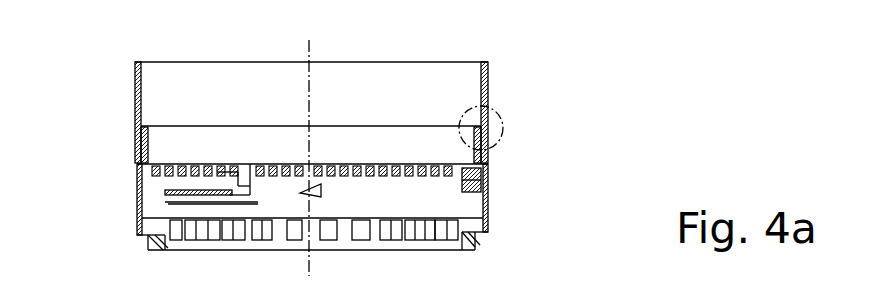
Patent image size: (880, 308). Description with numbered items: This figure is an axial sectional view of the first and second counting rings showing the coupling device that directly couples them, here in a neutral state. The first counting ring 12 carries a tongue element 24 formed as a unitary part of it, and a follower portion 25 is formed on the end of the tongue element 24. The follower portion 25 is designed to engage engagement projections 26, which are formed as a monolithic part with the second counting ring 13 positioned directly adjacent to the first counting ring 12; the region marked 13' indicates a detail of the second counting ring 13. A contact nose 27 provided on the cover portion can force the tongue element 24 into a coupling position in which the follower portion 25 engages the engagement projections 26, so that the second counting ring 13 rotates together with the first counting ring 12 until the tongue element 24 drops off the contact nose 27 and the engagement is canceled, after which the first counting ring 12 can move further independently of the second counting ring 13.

The first counting ring 12 is at (488, 232).
The second counting ring 13 is at (349, 100).
The detail region of shield edge 13' is at (521, 124).
The tongue element 24 is at (197, 200).
The follower portion 25 is at (230, 179).
The engagement projections 26 is at (352, 165).
The contact nose 27 is at (322, 192).